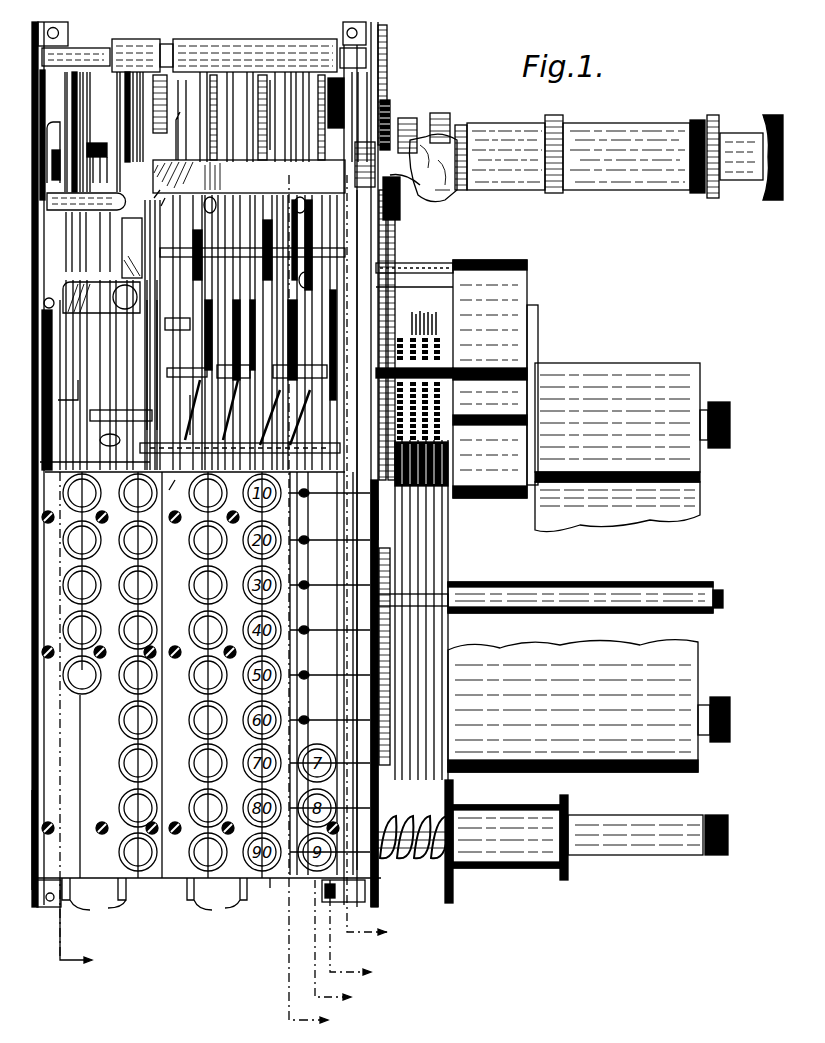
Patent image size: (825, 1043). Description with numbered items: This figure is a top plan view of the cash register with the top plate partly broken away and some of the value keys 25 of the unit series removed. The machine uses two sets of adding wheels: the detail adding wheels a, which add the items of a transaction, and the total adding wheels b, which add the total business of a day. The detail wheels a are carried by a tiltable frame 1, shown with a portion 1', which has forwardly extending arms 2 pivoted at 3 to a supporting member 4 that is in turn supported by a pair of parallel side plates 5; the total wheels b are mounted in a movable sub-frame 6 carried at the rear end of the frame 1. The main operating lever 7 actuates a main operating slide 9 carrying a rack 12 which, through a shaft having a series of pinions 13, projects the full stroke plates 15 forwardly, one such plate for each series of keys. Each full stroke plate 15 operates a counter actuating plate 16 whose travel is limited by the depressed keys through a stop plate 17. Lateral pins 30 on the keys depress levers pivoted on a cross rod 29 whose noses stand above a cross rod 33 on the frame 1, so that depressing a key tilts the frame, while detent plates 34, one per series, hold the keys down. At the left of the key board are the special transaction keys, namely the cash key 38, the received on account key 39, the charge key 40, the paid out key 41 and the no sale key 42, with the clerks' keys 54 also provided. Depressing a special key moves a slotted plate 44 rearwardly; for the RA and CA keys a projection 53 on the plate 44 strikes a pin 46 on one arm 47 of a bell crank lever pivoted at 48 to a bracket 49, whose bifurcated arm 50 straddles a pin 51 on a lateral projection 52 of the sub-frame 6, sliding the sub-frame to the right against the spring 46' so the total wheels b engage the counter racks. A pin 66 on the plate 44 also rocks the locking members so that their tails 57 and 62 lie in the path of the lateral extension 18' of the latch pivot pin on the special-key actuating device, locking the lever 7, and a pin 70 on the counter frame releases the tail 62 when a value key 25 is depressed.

The tiltable frame 1 is at (137, 365).
The frame part 1' is at (192, 415).
The forwardly extending arms 2 is at (284, 558).
The pivot 3 is at (355, 930).
The supporting member 4 is at (340, 943).
The side plates 5 is at (32, 790).
The sub-frame 6 is at (249, 176).
The main operating lever 7 is at (360, 236).
The main operating slide 9 is at (358, 432).
The rack 12 is at (340, 530).
The pinions 13 is at (86, 924).
The full stroke plates 15 is at (285, 140).
The counter actuating plate 16 is at (238, 72).
The stop plate 17 is at (78, 400).
The lateral extension 18' is at (97, 147).
The value keys 25 is at (226, 552).
The cross rod 29 is at (80, 50).
The lateral pins 30 is at (284, 882).
The cross rod 33 is at (230, 450).
The detent plates 34 is at (154, 900).
The cash (CA) key 38 is at (63, 675).
The received on account (RA) key 39 is at (63, 630).
The charge (CHG) key 40 is at (63, 585).
The paid out (PO) key 41 is at (63, 540).
The no sale (NS) key 42 is at (63, 493).
The plate 44 is at (40, 457).
The pin 46 is at (31, 303).
The spring 46' is at (34, 385).
The arm of bell crank lever 47 is at (101, 297).
The pivot 48 is at (125, 297).
The bracket 49 is at (80, 275).
The arm of bell crank lever 50 is at (150, 245).
The pin 51 is at (168, 198).
The lateral projection 52 is at (162, 185).
The lateral projection 53 is at (40, 336).
The clerks' keys 54 is at (157, 575).
The tail 57 is at (96, 226).
The tail 62 is at (96, 240).
The pin 66 is at (118, 437).
The pin 70 is at (121, 407).
The detail adding wheels a is at (310, 284).
The total adding wheels b is at (213, 200).